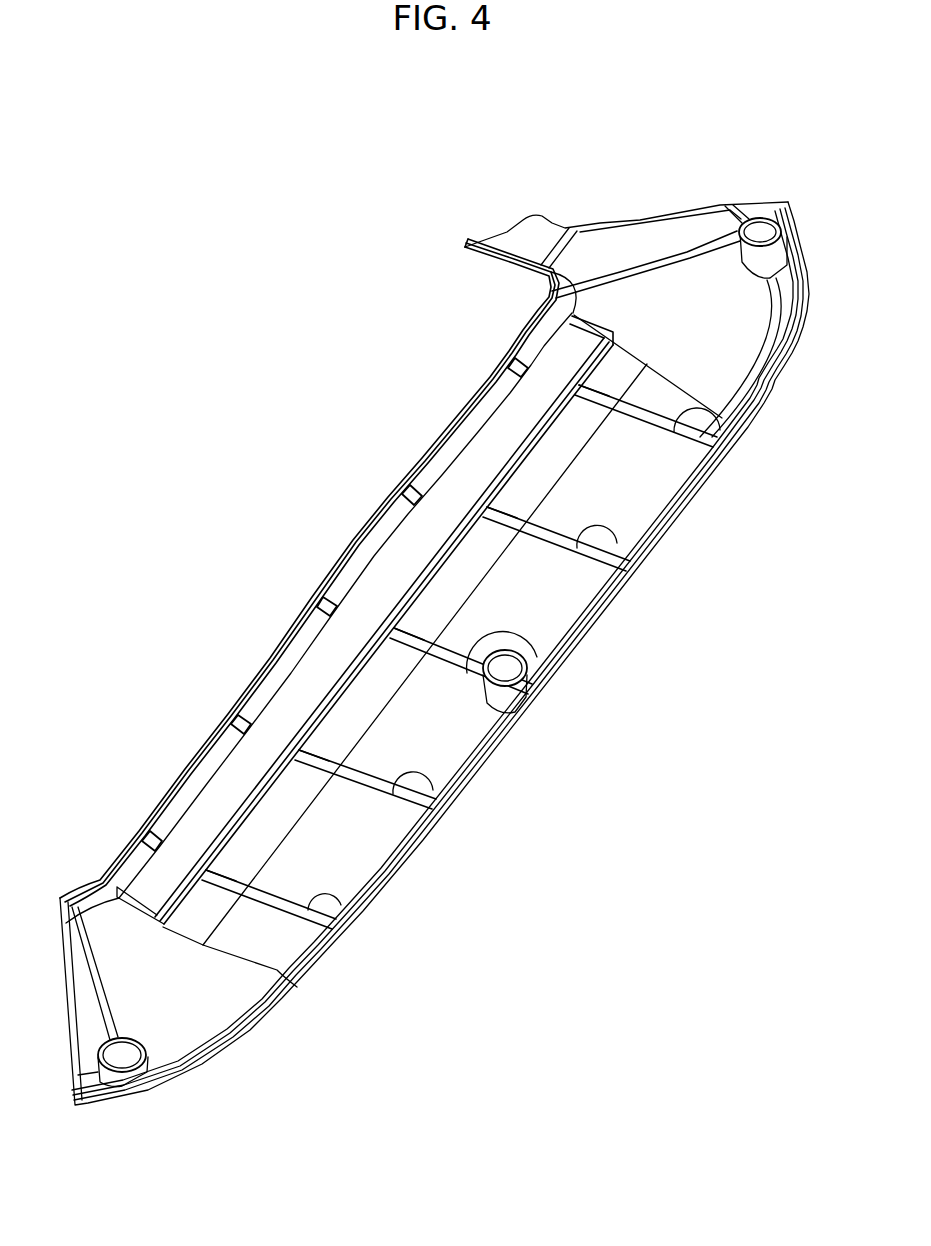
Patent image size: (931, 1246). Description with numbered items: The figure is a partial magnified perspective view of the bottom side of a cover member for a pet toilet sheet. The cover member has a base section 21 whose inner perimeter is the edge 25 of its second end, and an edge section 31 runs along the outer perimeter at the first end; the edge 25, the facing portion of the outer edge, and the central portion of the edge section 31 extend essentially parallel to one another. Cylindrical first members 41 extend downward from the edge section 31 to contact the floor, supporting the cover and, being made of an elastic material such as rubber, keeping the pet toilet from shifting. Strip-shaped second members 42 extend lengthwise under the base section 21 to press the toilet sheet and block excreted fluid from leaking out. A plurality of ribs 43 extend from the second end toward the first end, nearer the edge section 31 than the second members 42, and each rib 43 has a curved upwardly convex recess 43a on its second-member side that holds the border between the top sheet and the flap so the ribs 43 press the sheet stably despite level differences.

The base section 21 is at (630, 482).
The edge of the second end 25 is at (463, 262).
The edge section 31 is at (619, 595).
The first member 41 is at (762, 230).
The second member 42 is at (415, 537).
The rib 43 is at (741, 437).
The recess 43a is at (575, 382).